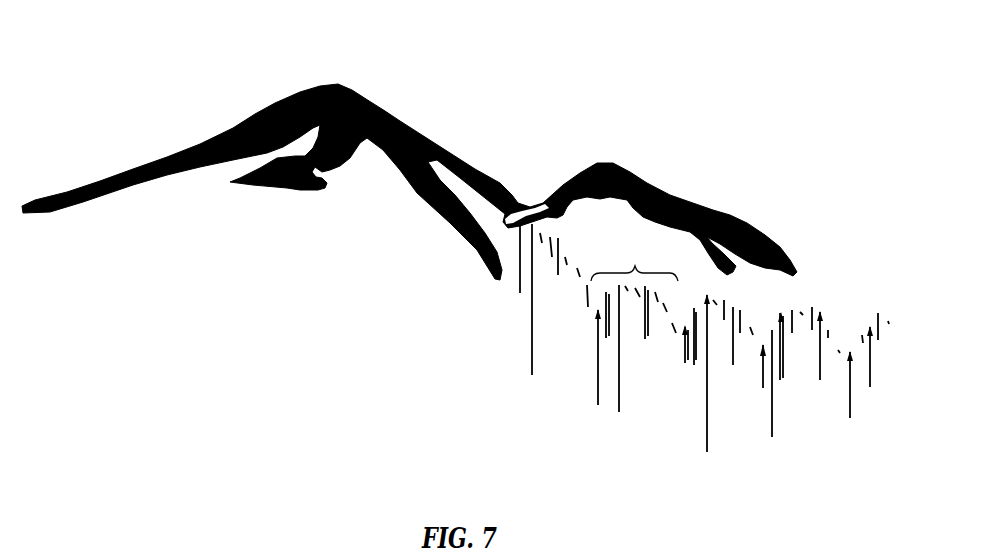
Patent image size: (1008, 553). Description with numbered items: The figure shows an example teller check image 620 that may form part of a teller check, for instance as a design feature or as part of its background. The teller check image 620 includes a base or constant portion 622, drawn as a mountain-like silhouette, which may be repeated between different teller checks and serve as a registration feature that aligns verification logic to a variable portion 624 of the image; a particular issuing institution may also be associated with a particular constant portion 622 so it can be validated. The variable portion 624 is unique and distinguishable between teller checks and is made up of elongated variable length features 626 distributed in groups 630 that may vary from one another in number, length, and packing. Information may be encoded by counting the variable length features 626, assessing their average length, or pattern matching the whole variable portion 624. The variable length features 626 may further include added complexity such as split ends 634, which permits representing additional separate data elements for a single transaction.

The teller check image 620 is at (166, 33).
The constant portion 622 is at (377, 102).
The variable portion 624 is at (690, 457).
The variable length features 626 is at (531, 352).
The groups 630 is at (634, 267).
The split ends 634 is at (682, 358).